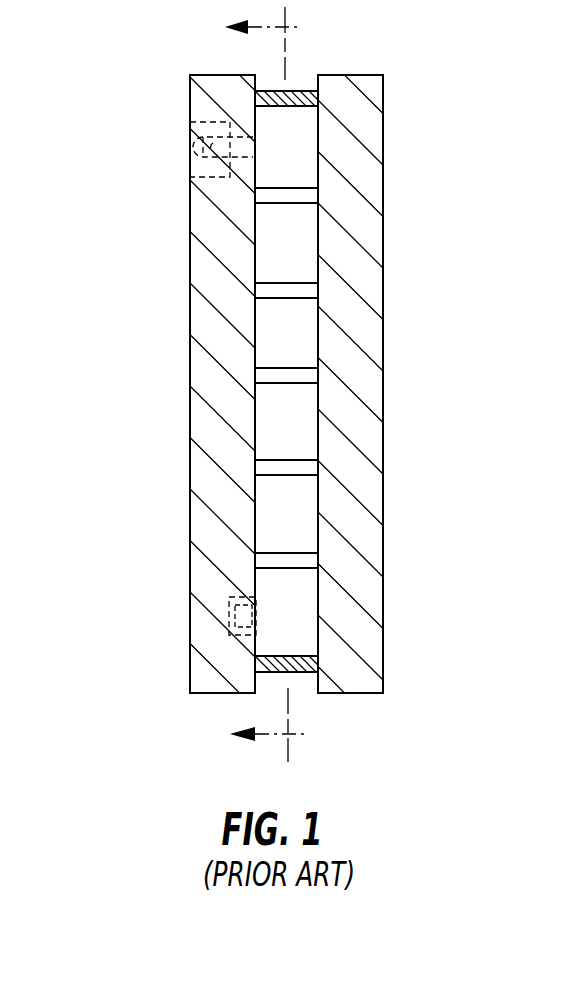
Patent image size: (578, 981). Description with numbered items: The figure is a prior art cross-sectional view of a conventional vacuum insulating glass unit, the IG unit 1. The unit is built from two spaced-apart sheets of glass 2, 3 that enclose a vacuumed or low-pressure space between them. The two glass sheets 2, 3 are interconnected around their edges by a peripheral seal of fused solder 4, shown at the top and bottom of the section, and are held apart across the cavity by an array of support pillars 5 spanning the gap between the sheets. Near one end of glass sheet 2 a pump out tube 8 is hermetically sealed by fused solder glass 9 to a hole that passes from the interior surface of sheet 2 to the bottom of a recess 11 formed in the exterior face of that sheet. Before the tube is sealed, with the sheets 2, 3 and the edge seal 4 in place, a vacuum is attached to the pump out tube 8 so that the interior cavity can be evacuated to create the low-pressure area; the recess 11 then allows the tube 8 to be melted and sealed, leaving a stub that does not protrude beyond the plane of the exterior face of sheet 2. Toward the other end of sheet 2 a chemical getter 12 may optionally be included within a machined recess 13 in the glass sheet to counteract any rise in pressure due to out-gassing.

The vacuum IG unit 1 is at (309, 391).
The glass sheet 2 is at (207, 427).
The glass sheet 3 is at (350, 310).
The peripheral seal of fused solder 4 is at (298, 90).
The support pillars 5 is at (293, 383).
The pump out tube 8 is at (190, 148).
The fused solder glass 9 is at (230, 130).
The recess 11 is at (210, 172).
The chemical getter 12 is at (229, 614).
The machined recess 13 is at (239, 643).